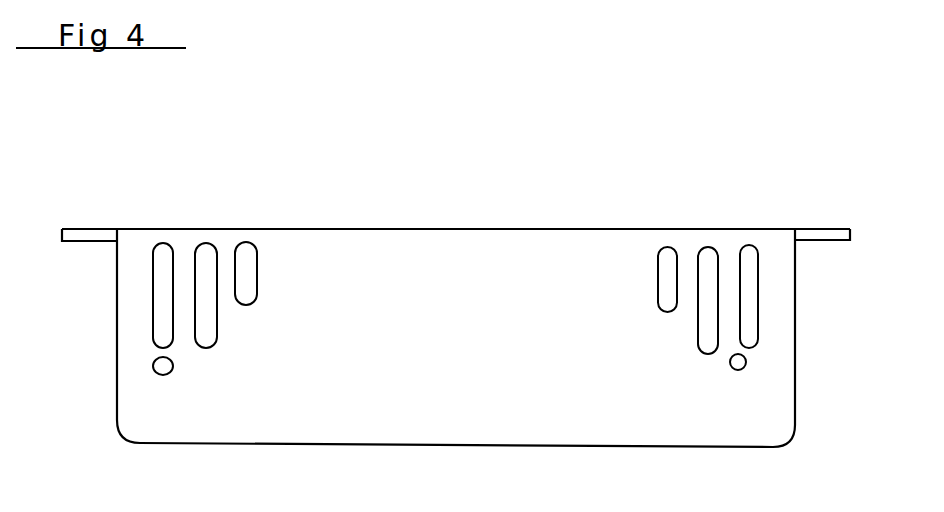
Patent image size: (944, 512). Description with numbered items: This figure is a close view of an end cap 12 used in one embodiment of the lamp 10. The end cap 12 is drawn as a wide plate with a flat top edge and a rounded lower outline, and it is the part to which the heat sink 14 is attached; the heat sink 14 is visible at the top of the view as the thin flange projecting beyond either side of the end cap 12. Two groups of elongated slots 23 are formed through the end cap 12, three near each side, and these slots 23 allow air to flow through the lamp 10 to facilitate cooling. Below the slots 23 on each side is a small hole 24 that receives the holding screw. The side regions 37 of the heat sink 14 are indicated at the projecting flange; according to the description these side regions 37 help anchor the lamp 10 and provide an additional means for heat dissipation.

The lamp 10 is at (483, 284).
The end cap 12 is at (430, 228).
The heat sink 14 is at (819, 229).
The slots 23 is at (708, 280).
The hole 24 is at (745, 359).
The side regions 37 is at (842, 240).